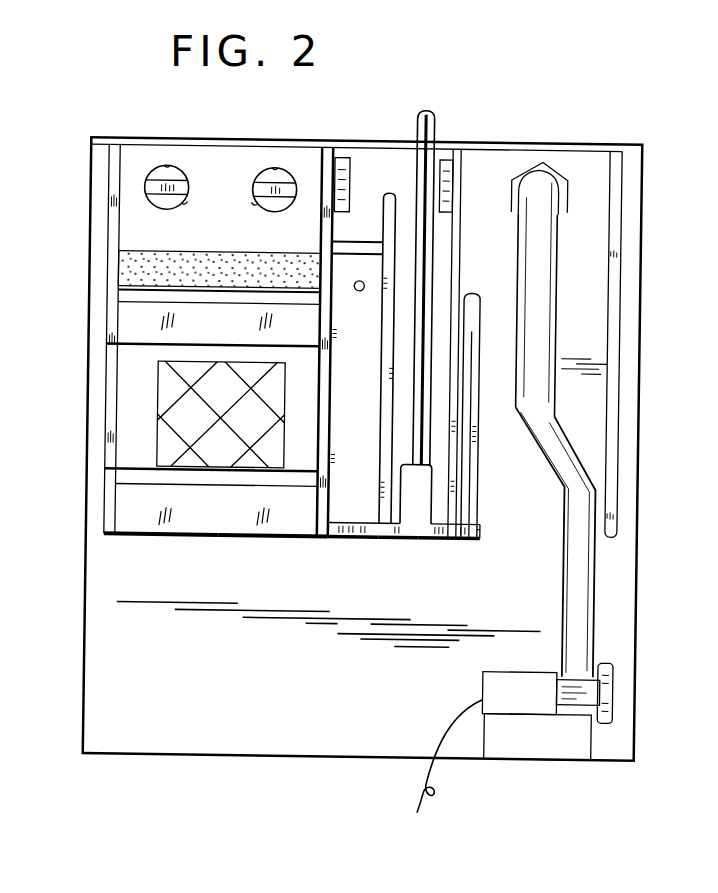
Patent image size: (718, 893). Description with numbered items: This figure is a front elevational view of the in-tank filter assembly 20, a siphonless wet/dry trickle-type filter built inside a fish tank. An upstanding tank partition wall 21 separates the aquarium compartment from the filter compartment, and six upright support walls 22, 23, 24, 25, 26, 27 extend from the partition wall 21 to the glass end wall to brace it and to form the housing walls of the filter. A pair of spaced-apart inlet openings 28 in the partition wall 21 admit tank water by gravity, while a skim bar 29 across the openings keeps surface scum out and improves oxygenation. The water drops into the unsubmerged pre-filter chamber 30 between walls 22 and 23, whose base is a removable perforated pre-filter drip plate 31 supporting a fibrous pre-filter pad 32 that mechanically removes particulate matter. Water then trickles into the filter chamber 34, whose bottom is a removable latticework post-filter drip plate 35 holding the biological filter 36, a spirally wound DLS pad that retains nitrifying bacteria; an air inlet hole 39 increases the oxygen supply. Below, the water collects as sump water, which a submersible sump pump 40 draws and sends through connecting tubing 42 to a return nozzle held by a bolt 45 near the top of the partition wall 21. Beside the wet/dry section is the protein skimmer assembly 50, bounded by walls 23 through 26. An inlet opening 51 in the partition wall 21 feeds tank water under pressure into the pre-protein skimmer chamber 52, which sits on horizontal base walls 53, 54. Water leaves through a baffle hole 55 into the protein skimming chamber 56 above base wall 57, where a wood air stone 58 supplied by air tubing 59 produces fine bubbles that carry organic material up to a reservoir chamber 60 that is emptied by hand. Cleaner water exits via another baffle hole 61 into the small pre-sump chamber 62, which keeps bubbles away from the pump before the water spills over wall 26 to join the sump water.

The in-tank filter assembly 20 is at (527, 99).
The tank partition wall 21 is at (592, 153).
The upright support wall 22 is at (104, 540).
The upright support wall 23 is at (315, 540).
The upright support wall 24 is at (383, 540).
The upright support wall 25 is at (453, 540).
The upright support wall 26 is at (481, 530).
The upright support wall 27 is at (612, 256).
The inlet openings 28 is at (163, 168).
The skim bar 29 is at (250, 203).
The pre-filter chamber 30 is at (139, 230).
The pre-filter drip plate 31 is at (125, 300).
The pre-filter pad 32 is at (128, 268).
The filter chamber 34 is at (141, 394).
The post-filter drip plate 35 is at (130, 480).
The biological filter 36 is at (177, 449).
The air inlet hole 39 is at (113, 346).
The sump pump 40 is at (557, 757).
The connecting tubing 42 is at (582, 600).
The bolt 45 is at (545, 156).
The protein skimmer assembly 50 is at (382, 138).
The inlet opening 51 is at (362, 291).
The pre-protein skimmer chamber 52 is at (365, 436).
The horizontal base wall 53 is at (363, 541).
The horizontal base wall 54 is at (342, 247).
The baffle hole 55 is at (375, 492).
The protein skimming chamber 56 is at (413, 378).
The base wall 57 is at (427, 540).
The wood air stone 58 is at (406, 510).
The air tubing 59 is at (430, 118).
The reservoir chamber 60 is at (371, 236).
The baffle hole 61 is at (483, 441).
The pre-sump chamber 62 is at (467, 294).